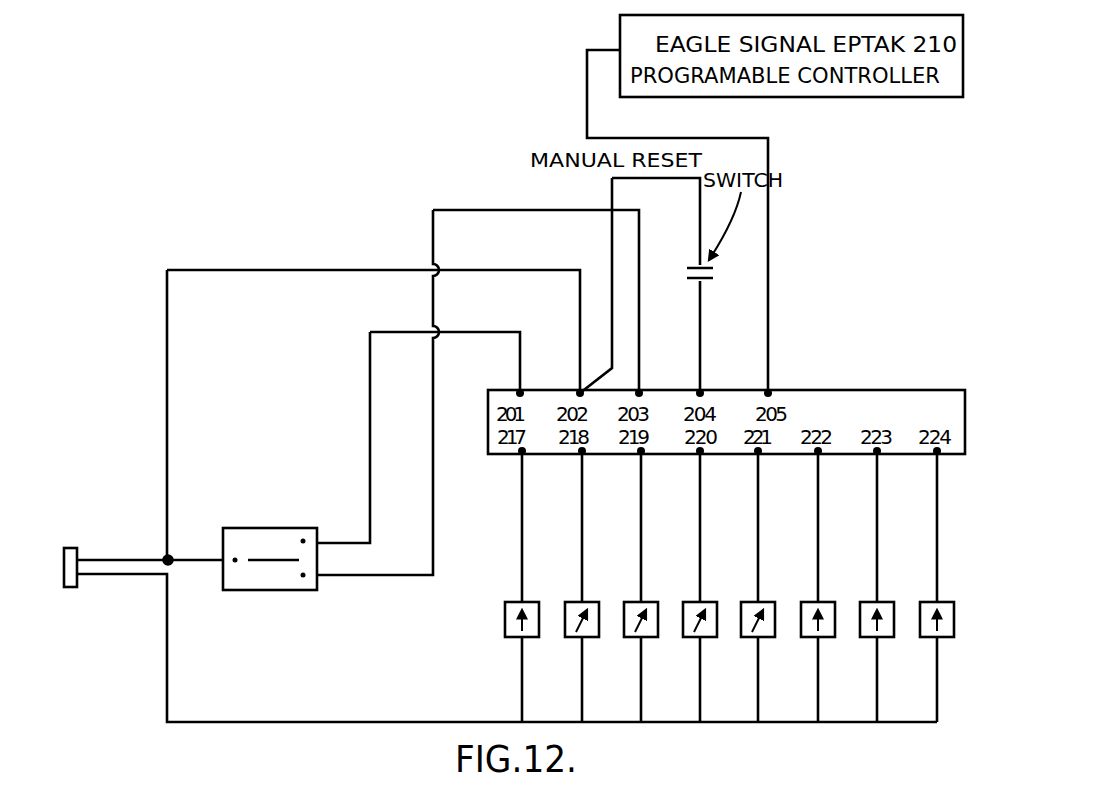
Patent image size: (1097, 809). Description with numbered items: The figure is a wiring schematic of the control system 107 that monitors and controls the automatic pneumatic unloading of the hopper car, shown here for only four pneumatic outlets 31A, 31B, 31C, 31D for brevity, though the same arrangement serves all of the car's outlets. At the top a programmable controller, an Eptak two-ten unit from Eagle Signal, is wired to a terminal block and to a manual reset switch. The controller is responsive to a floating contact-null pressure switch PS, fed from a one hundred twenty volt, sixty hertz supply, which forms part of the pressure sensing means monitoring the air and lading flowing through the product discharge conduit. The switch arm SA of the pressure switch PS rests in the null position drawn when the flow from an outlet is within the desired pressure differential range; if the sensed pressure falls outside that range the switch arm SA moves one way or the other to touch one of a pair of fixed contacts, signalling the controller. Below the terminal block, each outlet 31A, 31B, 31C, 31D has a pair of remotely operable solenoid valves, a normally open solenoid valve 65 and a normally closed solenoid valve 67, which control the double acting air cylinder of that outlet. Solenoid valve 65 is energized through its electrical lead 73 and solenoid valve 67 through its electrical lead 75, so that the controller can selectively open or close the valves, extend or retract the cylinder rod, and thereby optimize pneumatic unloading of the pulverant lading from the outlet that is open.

The control system 107 is at (149, 649).
The pressure switch PS is at (280, 528).
The switch arm SA is at (283, 562).
The electrical lead 75 is at (523, 521).
The electrical lead 73 is at (593, 517).
The solenoid valve 65 is at (505, 617).
The solenoid valve 67 is at (582, 602).
The pneumatic outlet 31A is at (555, 586).
The pneumatic outlet 31B is at (700, 668).
The pneumatic outlet 31C is at (818, 666).
The pneumatic outlet 31D is at (937, 664).